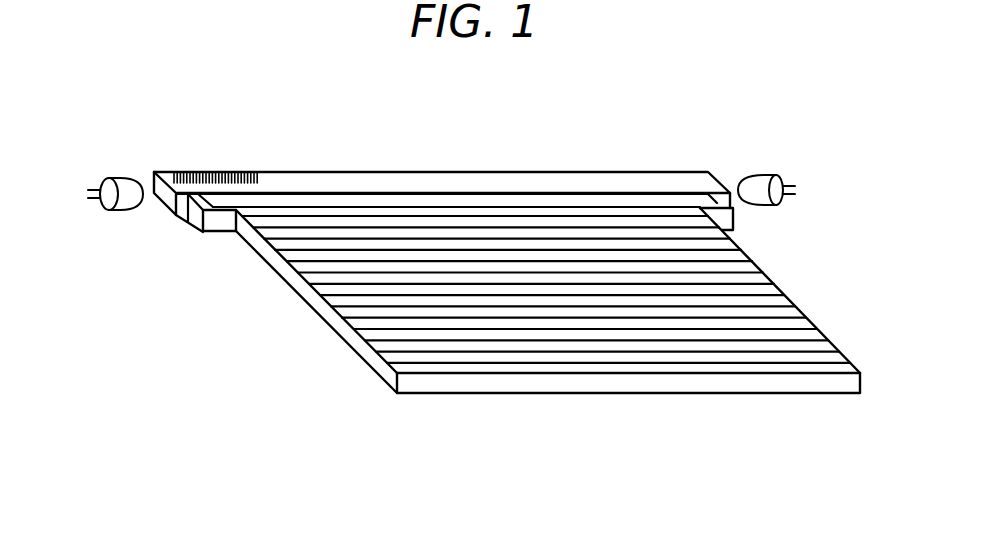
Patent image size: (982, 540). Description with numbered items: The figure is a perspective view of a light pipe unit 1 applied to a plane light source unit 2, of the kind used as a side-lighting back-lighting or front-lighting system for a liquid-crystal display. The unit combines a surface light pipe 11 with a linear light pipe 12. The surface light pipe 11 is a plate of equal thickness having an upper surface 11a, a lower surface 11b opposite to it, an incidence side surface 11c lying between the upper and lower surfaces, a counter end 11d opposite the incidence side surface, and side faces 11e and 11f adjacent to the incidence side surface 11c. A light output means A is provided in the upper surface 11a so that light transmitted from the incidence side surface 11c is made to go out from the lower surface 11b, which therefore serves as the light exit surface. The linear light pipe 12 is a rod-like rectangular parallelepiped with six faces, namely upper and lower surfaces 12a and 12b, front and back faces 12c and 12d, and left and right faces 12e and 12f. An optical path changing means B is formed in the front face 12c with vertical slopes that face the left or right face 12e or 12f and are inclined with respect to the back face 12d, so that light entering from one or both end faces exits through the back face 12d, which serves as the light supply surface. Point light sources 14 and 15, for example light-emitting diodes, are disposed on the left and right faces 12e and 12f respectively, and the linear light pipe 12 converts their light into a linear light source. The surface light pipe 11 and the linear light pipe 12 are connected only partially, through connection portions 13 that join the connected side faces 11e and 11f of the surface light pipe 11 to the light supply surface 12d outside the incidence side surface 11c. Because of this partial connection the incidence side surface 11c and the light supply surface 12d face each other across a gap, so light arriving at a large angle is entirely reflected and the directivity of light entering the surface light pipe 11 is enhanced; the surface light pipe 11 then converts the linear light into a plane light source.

The light pipe unit 1 is at (564, 121).
The plane light source unit 2 is at (159, 295).
The surface light pipe 11 is at (500, 232).
The upper surface 11a is at (718, 288).
The lower surface 11b is at (366, 365).
The incidence side surface 11c is at (640, 205).
The counter end 11d is at (576, 394).
The connected side face 11e is at (285, 266).
The connected side face 11f is at (790, 301).
The linear light pipe 12 is at (552, 198).
The upper surface 12a is at (410, 178).
The lower surface 12b is at (174, 212).
The front face 12c is at (369, 178).
The back face 12d is at (310, 191).
The left face 12e is at (152, 174).
The right face 12f is at (723, 186).
The connection portions 13 is at (213, 222).
The point light source 14 is at (98, 204).
The point light source 15 is at (795, 192).
The light output means A is at (762, 300).
The optical path changing means B is at (228, 171).